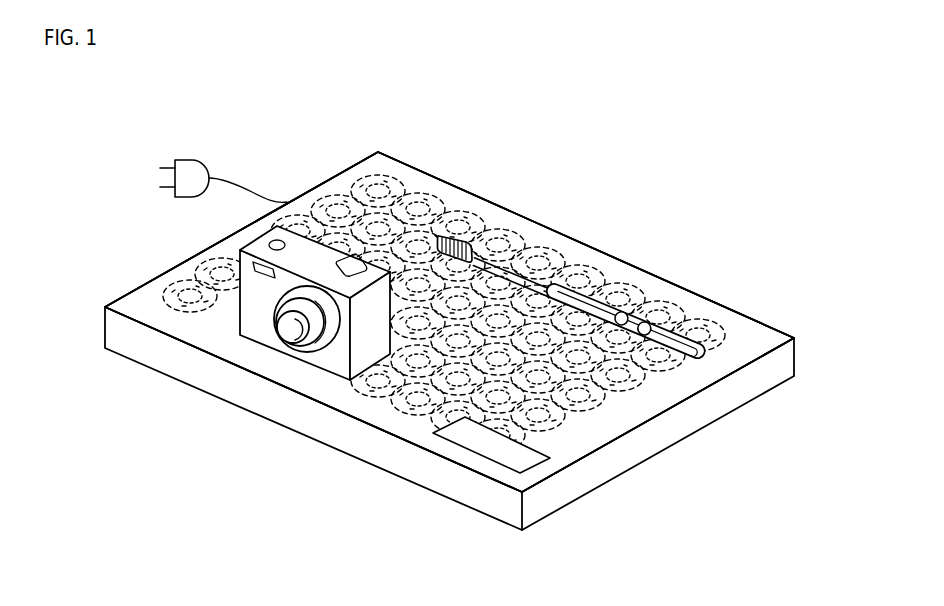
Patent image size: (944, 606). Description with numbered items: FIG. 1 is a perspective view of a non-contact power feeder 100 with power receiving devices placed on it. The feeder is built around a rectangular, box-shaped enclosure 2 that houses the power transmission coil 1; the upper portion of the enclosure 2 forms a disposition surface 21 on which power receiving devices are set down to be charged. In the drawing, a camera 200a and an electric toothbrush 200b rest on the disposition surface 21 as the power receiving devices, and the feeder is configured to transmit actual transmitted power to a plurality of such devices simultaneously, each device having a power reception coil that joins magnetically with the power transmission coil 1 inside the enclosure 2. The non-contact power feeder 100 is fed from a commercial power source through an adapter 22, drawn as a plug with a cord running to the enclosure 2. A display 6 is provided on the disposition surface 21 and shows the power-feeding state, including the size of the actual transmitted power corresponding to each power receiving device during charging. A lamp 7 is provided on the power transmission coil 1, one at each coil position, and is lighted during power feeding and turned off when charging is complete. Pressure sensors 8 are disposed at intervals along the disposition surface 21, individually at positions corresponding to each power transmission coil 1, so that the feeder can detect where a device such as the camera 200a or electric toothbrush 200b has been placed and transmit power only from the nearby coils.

The non-contact power feeder 100 is at (583, 215).
The power transmission coil 1 is at (352, 187).
The enclosure 2 is at (657, 430).
The disposition surface 21 is at (165, 312).
The adapter 22 is at (192, 170).
The display 6 is at (513, 450).
The lamp 7 is at (395, 184).
The pressure sensor 8 is at (413, 192).
The camera 200a is at (268, 337).
The electric toothbrush 200b is at (680, 330).